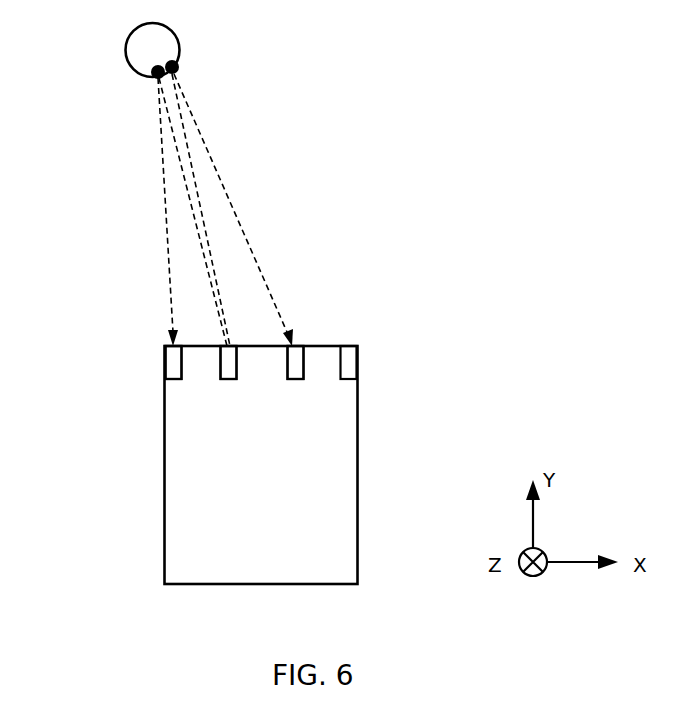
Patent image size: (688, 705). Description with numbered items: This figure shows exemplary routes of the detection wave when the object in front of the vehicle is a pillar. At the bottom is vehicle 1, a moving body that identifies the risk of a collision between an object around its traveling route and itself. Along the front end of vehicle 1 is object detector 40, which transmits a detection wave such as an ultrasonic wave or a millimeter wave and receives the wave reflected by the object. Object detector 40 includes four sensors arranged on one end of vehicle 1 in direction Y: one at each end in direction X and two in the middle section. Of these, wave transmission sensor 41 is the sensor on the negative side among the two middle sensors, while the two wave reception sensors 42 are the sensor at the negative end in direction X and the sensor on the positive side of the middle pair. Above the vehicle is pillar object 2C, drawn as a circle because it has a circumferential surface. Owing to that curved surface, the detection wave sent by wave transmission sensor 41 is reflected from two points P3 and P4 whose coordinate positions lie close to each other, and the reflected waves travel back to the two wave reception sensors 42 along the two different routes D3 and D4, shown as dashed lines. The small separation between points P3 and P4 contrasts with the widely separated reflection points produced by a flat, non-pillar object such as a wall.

The vehicle 1 is at (164, 480).
The object detector 40 is at (357, 363).
The wave transmission sensor 41 is at (234, 354).
The wave reception sensors 42 is at (165, 362).
The pillar object 2C is at (125, 50).
The reflection point P3 is at (154, 78).
The reflection point P4 is at (178, 70).
The route D3 is at (168, 198).
The route D4 is at (228, 200).